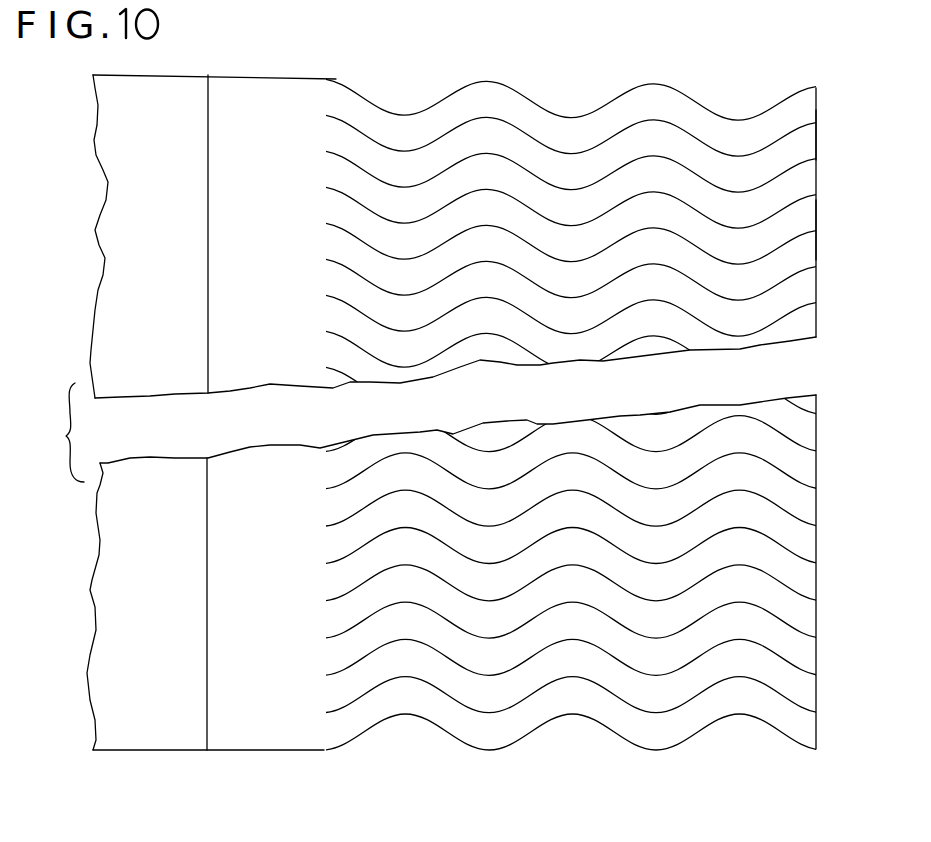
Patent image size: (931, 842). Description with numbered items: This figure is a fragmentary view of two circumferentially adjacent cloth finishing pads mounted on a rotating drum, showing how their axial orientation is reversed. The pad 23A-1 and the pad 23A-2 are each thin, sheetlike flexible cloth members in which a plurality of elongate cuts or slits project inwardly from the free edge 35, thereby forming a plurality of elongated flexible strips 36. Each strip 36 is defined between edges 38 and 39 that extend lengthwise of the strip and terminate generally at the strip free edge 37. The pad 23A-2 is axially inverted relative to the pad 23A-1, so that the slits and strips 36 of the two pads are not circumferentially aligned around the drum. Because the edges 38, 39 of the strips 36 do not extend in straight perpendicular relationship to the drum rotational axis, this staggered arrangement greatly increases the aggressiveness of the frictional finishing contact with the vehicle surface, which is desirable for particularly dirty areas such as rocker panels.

The pad 23A-1 is at (338, 74).
The pad 23A-2 is at (272, 754).
The free edge 35 is at (817, 242).
The elongated flexible strip 36 is at (653, 92).
The strip free edge 37 is at (813, 145).
The edge 38 is at (567, 116).
The edge 39 is at (713, 158).